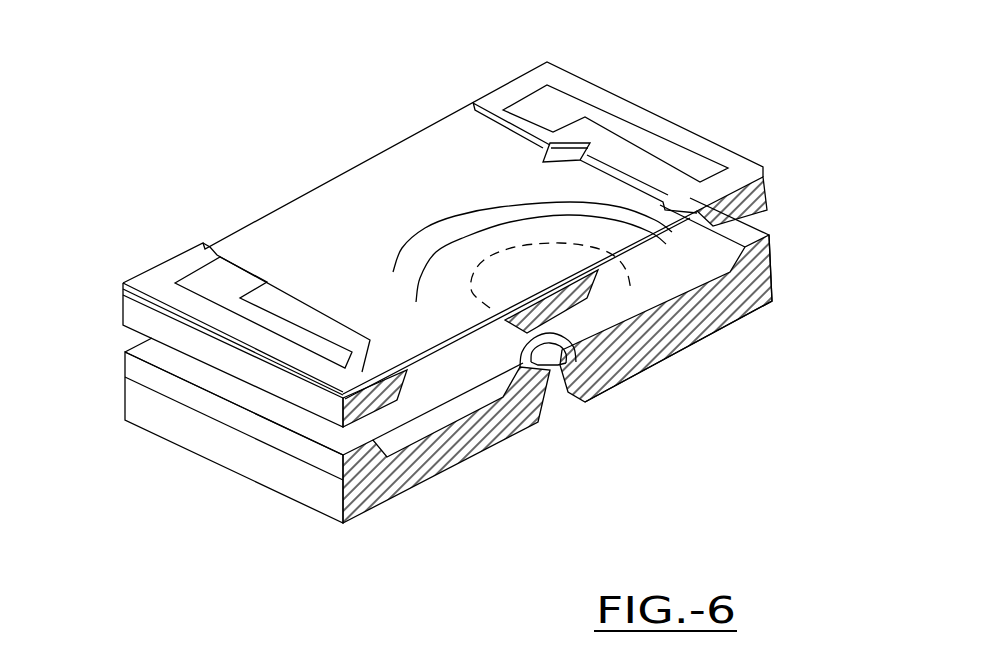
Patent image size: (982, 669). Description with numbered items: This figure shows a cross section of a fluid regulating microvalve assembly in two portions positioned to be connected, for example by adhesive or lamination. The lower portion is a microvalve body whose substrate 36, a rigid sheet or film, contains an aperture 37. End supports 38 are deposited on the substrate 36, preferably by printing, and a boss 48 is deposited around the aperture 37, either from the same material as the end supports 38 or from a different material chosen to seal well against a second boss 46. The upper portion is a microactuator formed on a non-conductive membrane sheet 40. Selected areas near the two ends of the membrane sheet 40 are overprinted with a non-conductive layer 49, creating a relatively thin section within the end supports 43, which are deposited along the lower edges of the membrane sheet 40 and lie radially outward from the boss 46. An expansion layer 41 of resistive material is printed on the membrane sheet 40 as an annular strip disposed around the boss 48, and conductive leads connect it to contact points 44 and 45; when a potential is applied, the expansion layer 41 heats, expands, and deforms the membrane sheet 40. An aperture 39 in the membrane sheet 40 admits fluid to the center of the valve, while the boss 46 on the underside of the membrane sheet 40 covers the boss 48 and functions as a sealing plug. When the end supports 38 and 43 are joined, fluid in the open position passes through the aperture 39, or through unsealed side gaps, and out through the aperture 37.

The substrate 36 is at (137, 397).
The aperture 37 is at (557, 398).
The end supports 38 is at (300, 447).
The aperture 39 is at (557, 155).
The membrane sheet 40 is at (502, 237).
The expansion layer 41 is at (402, 273).
The end supports 43 is at (137, 313).
The contact point 44 is at (180, 260).
The contact point 45 is at (530, 95).
The boss 46 is at (588, 292).
The boss 48 is at (593, 390).
The non-conductive layer 49 is at (770, 180).